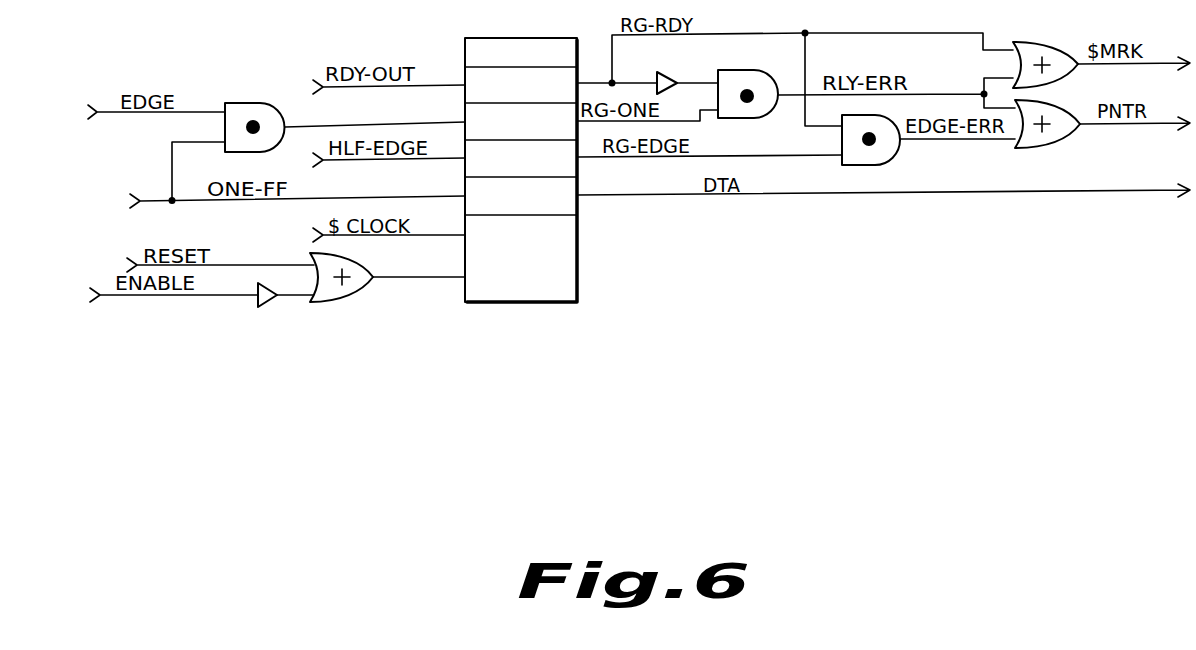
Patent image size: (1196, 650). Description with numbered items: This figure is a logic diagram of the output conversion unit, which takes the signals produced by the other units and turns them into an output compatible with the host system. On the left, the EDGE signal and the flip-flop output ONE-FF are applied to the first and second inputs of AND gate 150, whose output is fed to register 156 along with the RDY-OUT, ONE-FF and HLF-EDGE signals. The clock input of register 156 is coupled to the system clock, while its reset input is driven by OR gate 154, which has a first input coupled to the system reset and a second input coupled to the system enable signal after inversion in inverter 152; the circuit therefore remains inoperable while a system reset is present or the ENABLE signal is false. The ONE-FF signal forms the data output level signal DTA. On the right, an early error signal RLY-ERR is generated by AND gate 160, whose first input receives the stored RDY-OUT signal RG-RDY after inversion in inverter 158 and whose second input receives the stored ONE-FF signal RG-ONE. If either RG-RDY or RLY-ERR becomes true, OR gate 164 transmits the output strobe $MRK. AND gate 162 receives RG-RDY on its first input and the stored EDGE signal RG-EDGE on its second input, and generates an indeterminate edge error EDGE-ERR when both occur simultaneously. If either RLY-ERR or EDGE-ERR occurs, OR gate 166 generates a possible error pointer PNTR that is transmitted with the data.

The AND gate 150 is at (248, 103).
The inverter 152 is at (263, 306).
The OR gate 154 is at (369, 288).
The register 156 is at (548, 38).
The inverter 158 is at (676, 67).
The AND gate 160 is at (774, 73).
The AND gate 162 is at (888, 163).
The OR gate 164 is at (1020, 42).
The OR gate 166 is at (1065, 148).